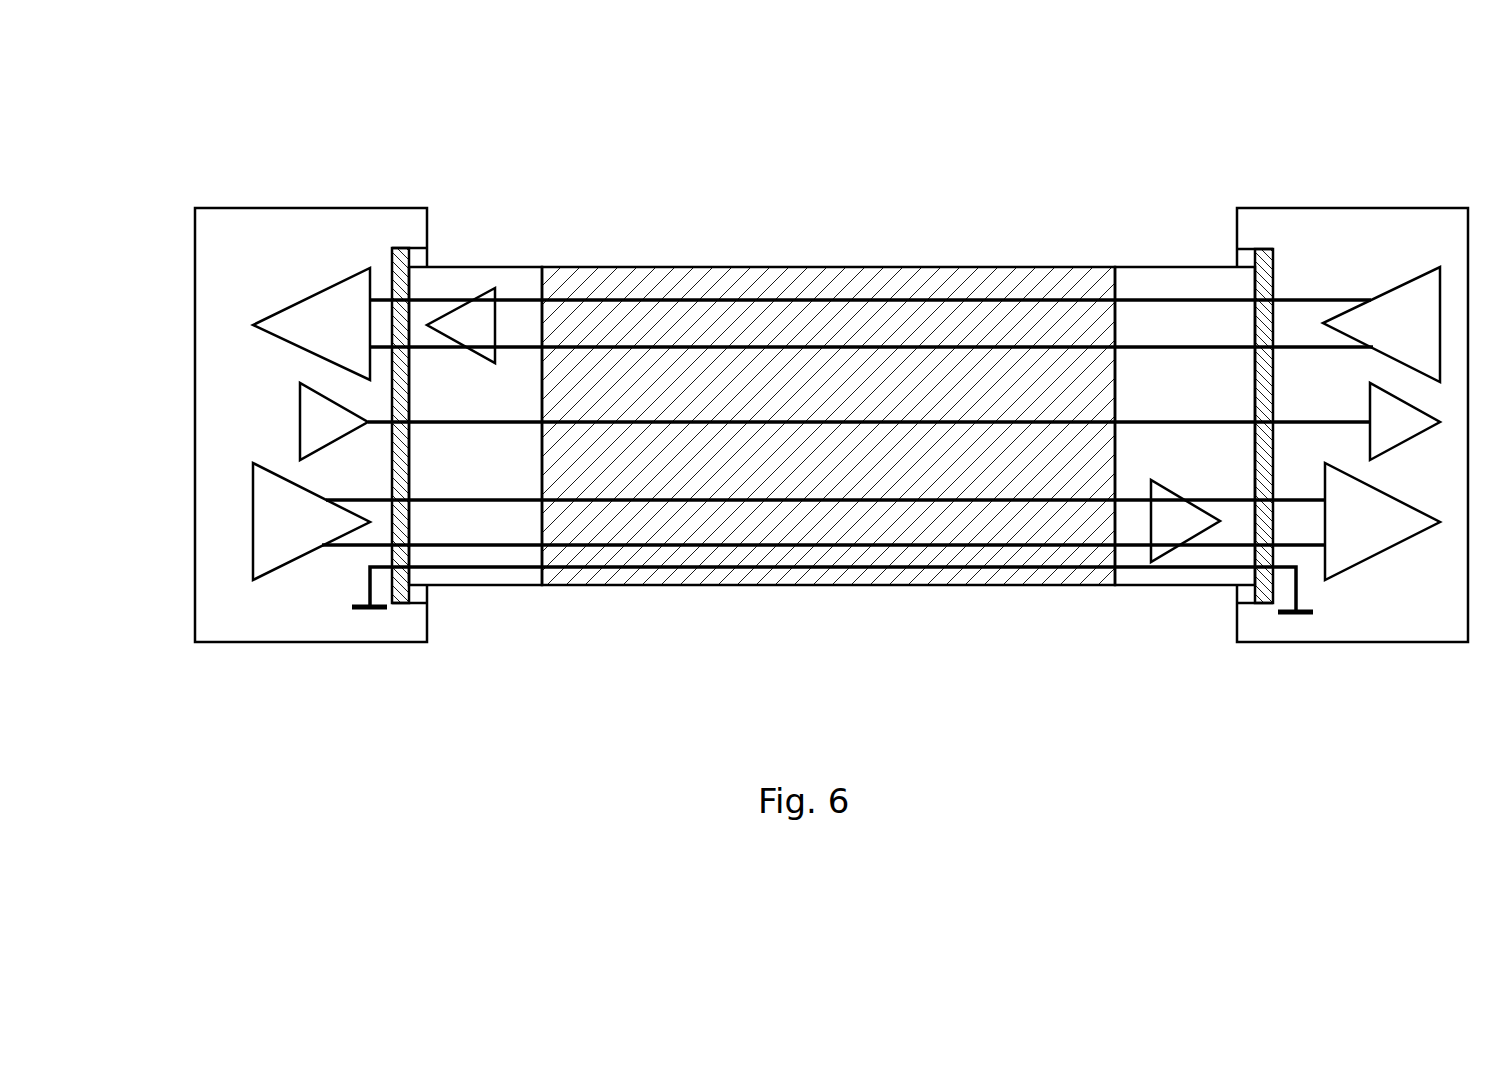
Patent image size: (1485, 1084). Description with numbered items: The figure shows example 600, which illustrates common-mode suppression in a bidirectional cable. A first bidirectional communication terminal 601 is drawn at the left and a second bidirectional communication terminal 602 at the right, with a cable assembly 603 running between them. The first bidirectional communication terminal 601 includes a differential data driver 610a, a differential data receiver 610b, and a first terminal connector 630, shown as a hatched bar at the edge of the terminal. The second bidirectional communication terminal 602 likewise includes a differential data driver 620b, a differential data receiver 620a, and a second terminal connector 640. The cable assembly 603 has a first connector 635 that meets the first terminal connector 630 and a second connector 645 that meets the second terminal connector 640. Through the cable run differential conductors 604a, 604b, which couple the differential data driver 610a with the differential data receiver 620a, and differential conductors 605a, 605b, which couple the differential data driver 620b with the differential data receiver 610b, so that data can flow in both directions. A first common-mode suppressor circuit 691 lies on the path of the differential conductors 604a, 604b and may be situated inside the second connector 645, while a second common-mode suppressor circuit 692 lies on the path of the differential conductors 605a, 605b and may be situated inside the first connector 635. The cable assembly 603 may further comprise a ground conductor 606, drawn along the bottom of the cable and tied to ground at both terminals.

The example 600 is at (196, 88).
The first bidirectional communication terminal 601 is at (311, 425).
The second bidirectional communication terminal 602 is at (1352, 425).
The cable assembly 603 is at (748, 262).
The differential conductor 604a is at (565, 500).
The differential conductor 604b is at (682, 547).
The differential conductor 605a is at (930, 295).
The differential conductor 605b is at (1017, 340).
The ground conductor 606 is at (797, 575).
The differential data driver 610a is at (262, 522).
The differential data receiver 610b is at (265, 323).
The differential data receiver 620a is at (1340, 502).
The differential data driver 620b is at (1413, 288).
The first terminal connector 630 is at (403, 255).
The first connector 635 is at (438, 273).
The second terminal connector 640 is at (1262, 592).
The second connector 645 is at (1192, 578).
The first common-mode suppressor circuit 691 is at (1192, 527).
The second common-mode suppressor circuit 692 is at (483, 300).